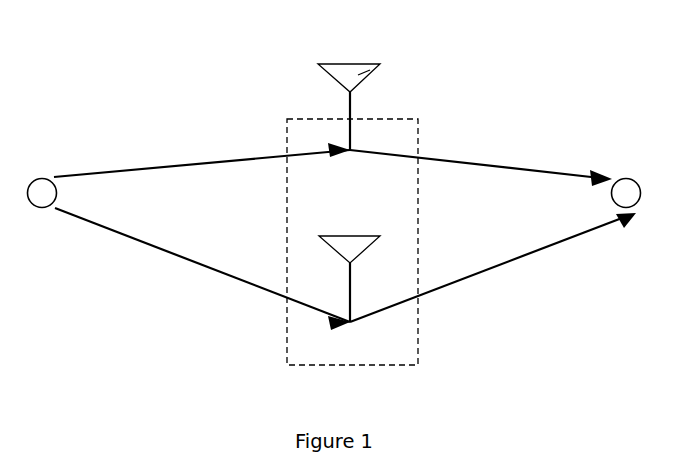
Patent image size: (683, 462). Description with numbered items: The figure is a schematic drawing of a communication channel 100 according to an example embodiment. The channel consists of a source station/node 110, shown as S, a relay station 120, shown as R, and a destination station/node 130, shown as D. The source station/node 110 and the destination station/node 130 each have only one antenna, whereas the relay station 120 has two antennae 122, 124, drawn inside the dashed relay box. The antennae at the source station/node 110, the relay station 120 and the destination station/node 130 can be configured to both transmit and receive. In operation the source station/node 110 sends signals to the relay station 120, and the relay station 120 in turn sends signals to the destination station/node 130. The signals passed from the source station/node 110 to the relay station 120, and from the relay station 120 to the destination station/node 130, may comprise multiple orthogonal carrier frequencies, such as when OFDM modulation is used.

The wireless relay communication system 100 is at (86, 123).
The source station/node 110 is at (40, 207).
The relay station 120 is at (422, 205).
The antenna 122 is at (377, 64).
The antenna 124 is at (373, 237).
The destination station/node 130 is at (630, 178).